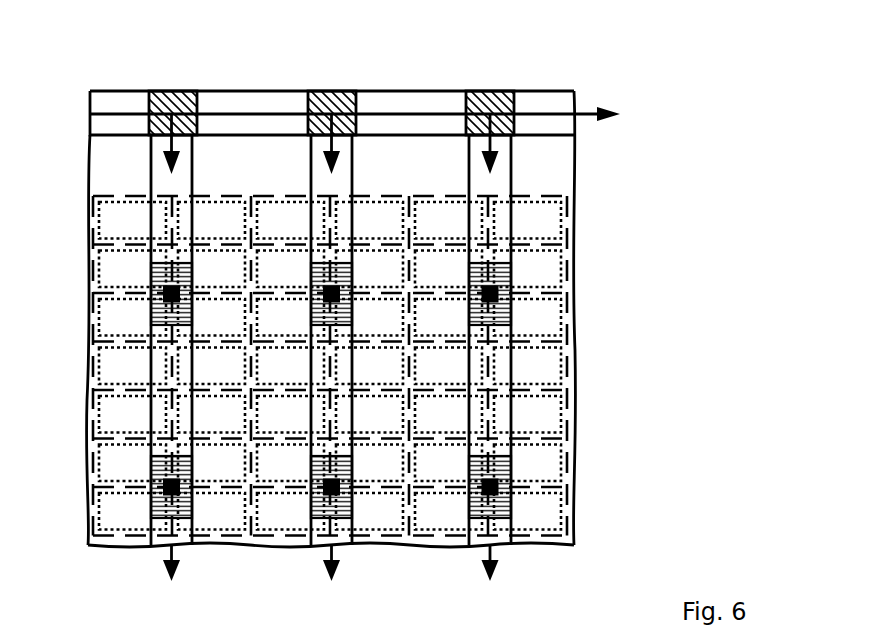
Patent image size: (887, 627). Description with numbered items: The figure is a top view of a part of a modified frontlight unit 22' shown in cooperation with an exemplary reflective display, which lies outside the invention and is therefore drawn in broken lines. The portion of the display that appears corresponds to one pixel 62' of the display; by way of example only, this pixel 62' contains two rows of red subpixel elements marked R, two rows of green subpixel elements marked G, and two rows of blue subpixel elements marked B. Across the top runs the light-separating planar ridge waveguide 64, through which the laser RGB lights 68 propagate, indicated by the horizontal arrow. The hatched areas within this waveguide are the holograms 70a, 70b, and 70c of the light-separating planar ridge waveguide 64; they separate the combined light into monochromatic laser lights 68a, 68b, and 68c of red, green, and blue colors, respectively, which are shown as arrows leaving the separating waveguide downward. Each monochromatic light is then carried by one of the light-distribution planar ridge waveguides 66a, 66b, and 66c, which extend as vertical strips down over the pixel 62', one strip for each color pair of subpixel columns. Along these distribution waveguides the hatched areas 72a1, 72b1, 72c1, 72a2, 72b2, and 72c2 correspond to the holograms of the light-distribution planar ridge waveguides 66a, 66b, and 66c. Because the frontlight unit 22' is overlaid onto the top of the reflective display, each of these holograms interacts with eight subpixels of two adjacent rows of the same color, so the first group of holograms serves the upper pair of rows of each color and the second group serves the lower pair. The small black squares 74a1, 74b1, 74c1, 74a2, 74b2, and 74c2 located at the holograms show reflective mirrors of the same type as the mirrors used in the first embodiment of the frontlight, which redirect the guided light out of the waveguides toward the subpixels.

The frontlight unit 22' is at (395, 277).
The pixel 62' is at (395, 350).
The light-separating planar ridge waveguide 64 is at (557, 101).
The light-distribution planar ridge waveguide 66a is at (150, 163).
The light-distribution planar ridge waveguide 66b is at (310, 180).
The light-distribution planar ridge waveguide 66c is at (513, 182).
The laser RGB lights 68 is at (591, 112).
The monochromatic laser light 68a is at (180, 147).
The monochromatic laser light 68b is at (342, 147).
The monochromatic laser light 68c is at (500, 147).
The hologram 70a is at (159, 95).
The hologram 70b is at (318, 95).
The hologram 70c is at (476, 95).
The hologram 72a1 is at (163, 283).
The hologram 72b1 is at (350, 270).
The hologram 72c1 is at (513, 275).
The hologram 72a2 is at (152, 468).
The hologram 72b2 is at (350, 470).
The hologram 72c2 is at (512, 462).
The reflective mirror 74a1 is at (168, 303).
The reflective mirror 74b1 is at (350, 297).
The reflective mirror 74c1 is at (513, 300).
The reflective mirror 74a2 is at (166, 480).
The reflective mirror 74b2 is at (350, 480).
The reflective mirror 74c2 is at (512, 484).